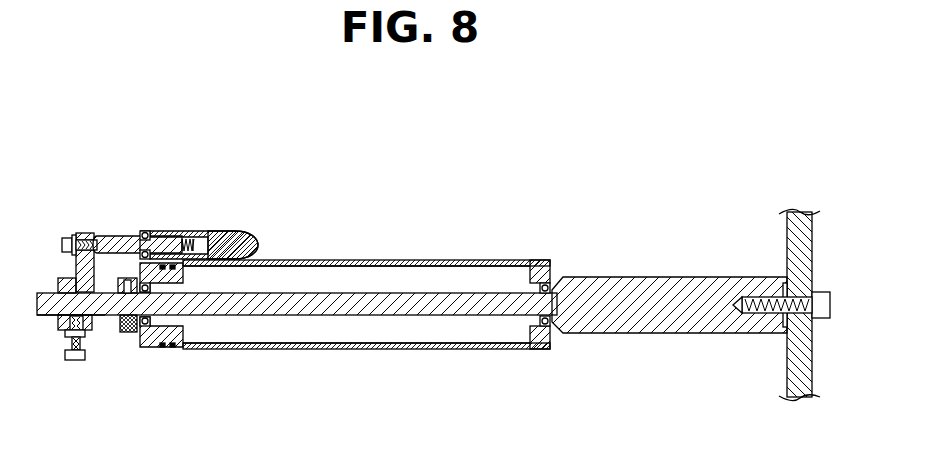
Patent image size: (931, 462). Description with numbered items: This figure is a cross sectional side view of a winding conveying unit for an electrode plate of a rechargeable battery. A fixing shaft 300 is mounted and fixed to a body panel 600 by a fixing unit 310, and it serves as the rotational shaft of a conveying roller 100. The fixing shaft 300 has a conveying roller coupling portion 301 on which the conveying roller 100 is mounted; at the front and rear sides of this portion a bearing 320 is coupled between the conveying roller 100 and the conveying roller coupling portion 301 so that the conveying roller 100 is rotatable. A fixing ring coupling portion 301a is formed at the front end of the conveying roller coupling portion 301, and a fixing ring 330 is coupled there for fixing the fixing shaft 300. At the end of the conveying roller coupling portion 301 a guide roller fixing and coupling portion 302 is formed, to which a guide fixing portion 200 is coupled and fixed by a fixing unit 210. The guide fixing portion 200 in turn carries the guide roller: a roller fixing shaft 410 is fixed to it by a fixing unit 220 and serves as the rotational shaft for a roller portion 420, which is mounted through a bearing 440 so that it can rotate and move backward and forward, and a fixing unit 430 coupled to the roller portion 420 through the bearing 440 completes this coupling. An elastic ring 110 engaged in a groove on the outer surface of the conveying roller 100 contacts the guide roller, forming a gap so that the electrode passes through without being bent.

The conveying roller 100 is at (418, 258).
The elastic ring 110 is at (183, 264).
The guide fixing portion 200 is at (83, 229).
The fixing unit 210 is at (72, 364).
The fixing unit 220 is at (60, 233).
The fixing shaft 300 is at (658, 340).
The conveying roller coupling portion 301 is at (290, 313).
The fixing ring coupling portion 301a is at (130, 293).
The guide roller fixing and coupling portion 302 is at (47, 316).
The fixing unit 310 is at (823, 288).
The bearing 320 is at (548, 264).
The fixing ring 330 is at (116, 335).
The roller fixing shaft 410 is at (108, 232).
The roller portion 420 is at (172, 229).
The fixing unit 430 is at (252, 230).
The bearing 440 is at (147, 231).
The body panel 600 is at (798, 222).